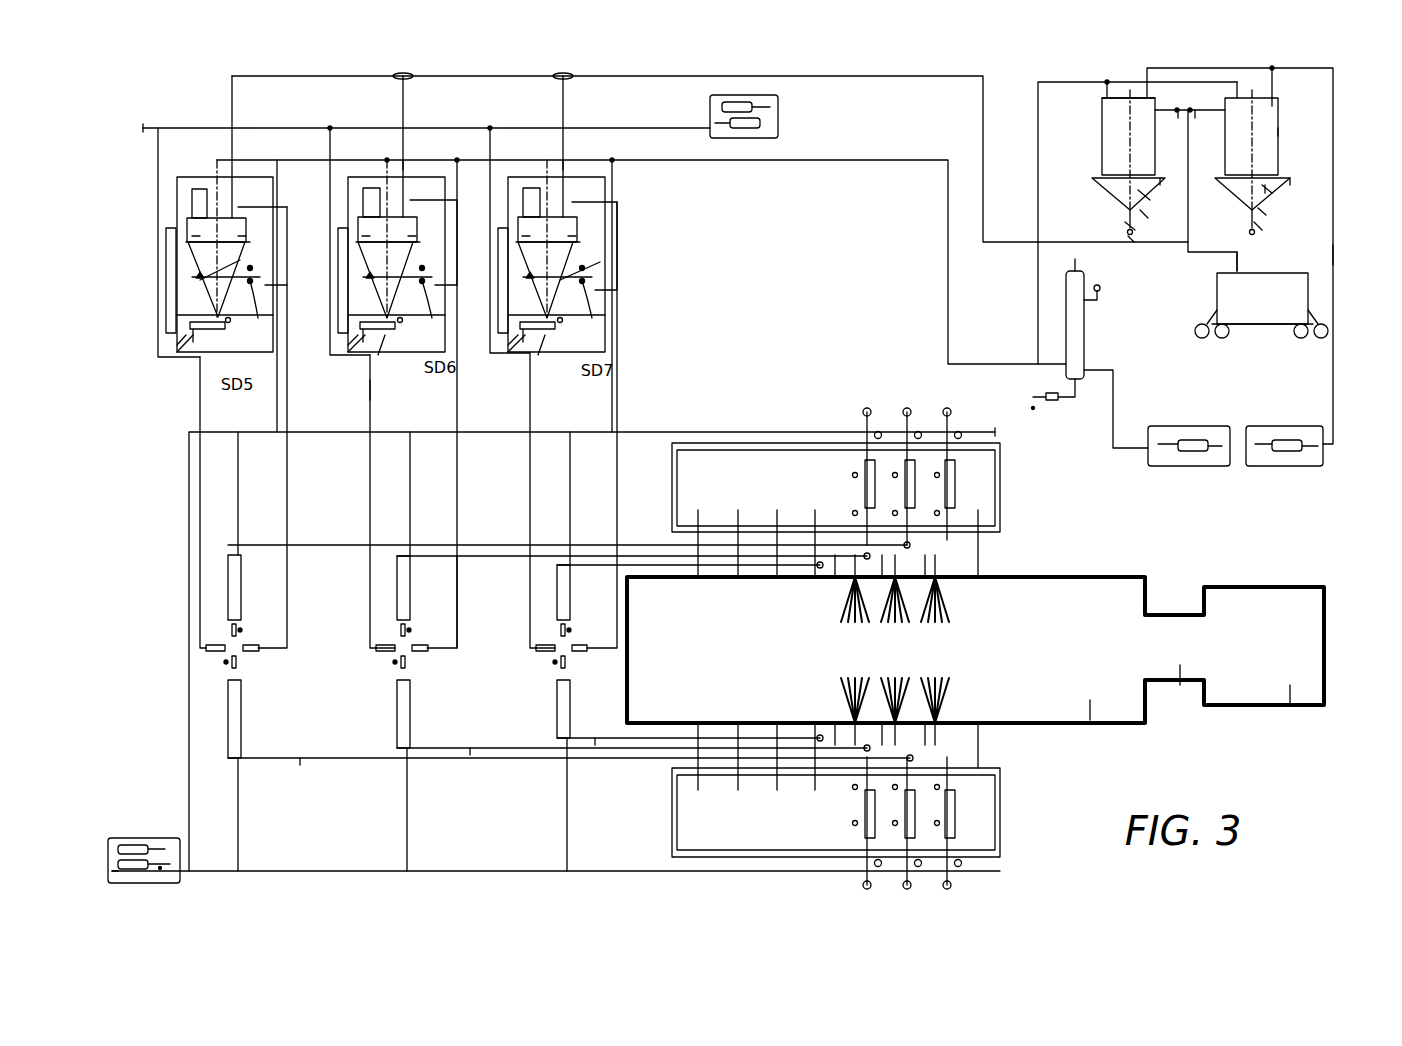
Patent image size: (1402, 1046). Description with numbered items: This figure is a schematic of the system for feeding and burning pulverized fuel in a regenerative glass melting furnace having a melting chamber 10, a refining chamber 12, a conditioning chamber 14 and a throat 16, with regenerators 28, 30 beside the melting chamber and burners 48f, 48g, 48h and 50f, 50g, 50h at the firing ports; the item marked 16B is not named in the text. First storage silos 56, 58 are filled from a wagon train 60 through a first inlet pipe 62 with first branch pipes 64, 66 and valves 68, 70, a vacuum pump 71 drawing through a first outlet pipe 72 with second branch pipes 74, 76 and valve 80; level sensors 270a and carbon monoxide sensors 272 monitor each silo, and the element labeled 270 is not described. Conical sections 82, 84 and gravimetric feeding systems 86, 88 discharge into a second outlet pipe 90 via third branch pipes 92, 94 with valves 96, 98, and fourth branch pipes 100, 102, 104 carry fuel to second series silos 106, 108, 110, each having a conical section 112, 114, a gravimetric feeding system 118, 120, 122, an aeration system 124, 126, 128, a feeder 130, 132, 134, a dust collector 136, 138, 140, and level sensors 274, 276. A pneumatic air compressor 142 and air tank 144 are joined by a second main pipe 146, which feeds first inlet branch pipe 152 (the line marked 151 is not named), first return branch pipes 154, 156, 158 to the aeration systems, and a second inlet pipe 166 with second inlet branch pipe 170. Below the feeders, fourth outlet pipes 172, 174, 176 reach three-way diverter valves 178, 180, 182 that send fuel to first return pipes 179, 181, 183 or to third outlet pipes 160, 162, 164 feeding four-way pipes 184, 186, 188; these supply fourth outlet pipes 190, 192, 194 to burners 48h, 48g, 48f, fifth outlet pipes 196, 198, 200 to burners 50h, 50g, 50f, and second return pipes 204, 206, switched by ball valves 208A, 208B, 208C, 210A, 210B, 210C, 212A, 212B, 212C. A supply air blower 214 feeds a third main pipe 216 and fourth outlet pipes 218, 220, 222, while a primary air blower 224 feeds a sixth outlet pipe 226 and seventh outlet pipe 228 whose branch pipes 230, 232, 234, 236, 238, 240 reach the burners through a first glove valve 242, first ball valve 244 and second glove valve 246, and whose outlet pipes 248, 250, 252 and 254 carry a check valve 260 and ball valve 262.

The melting chamber 10 is at (665, 723).
The refining chamber 12 is at (1090, 715).
The conditioning chamber 14 is at (1290, 700).
The throat 16 is at (1180, 685).
The hopper inlet 16B is at (1102, 105).
The regenerator 28 is at (710, 460).
The regenerator 30 is at (745, 850).
The burner 48f is at (843, 600).
The burner 48g is at (895, 618).
The burner 48h is at (947, 600).
The burner 50f is at (843, 700).
The burner 50g is at (895, 685).
The burner 50h is at (947, 700).
The first storage silo 56 is at (1102, 144).
The first storage silo 58 is at (1228, 175).
The wagon train 60 is at (1258, 324).
The first inlet pipe 62 is at (1237, 258).
The first branch pipe 64 is at (1178, 110).
The first branch pipe 66 is at (1222, 112).
The valve 68 is at (1172, 110).
The valve 70 is at (1195, 110).
The vacuum pump 71 is at (1258, 466).
The first outlet pipe 72 is at (1333, 260).
The second branch pipe 74 is at (1137, 82).
The second branch pipe 76 is at (1272, 68).
The valve 80 is at (1275, 98).
The conical section 82 is at (1137, 195).
The conical section 84 is at (1262, 190).
The gravimetric fuel feeding system 86 is at (1158, 178).
The gravimetric fuel feeding system 88 is at (1290, 178).
The second outlet pipe 90 is at (1130, 236).
The third branch pipe 92 is at (1130, 225).
The third branch pipe 94 is at (1258, 225).
The valve 96 is at (1142, 215).
The valve 98 is at (1262, 210).
The fourth branch pipe 100 is at (232, 104).
The fourth branch pipe 102 is at (403, 104).
The fourth branch pipe 104 is at (563, 104).
The second series silo 106 is at (187, 218).
The second series silo 108 is at (365, 200).
The second series silo 110 is at (520, 222).
The conical section 112 is at (190, 263).
The conical section 114 is at (365, 260).
The gravimetric feeding system 118 is at (192, 250).
The gravimetric feeding system 120 is at (358, 218).
The gravimetric feeding system 122 is at (525, 245).
The aeration system 124 is at (287, 300).
The aeration system 126 is at (400, 323).
The aeration system 128 is at (600, 275).
The feeder 130 is at (228, 323).
The feeder 132 is at (388, 355).
The feeder 134 is at (580, 328).
The dust collector 136 is at (192, 200).
The dust collector 138 is at (370, 188).
The dust collector 140 is at (540, 188).
The pneumatic air compressor 142 is at (1152, 466).
The air tank 144 is at (1084, 330).
The second main pipe 146 is at (948, 250).
The vent connection 151 is at (403, 160).
The first inlet branch pipe 152 is at (563, 160).
The first return branch pipe 154 is at (277, 165).
The first return branch pipe 156 is at (457, 160).
The first return branch pipe 158 is at (612, 165).
The third outlet pipe 160 is at (200, 400).
The third outlet pipe 162 is at (370, 420).
The third outlet pipe 164 is at (530, 415).
The second inlet pipe 166 is at (1038, 160).
The second inlet branch pipe 170 is at (1237, 95).
The fourth outlet pipe 172 is at (166, 333).
The fourth outlet pipe 174 is at (372, 400).
The fourth outlet pipe 176 is at (545, 355).
The three-way diverter valve 178 is at (178, 352).
The first return pipe 179 is at (215, 280).
The three-way diverter valve 180 is at (348, 355).
The first return pipe 181 is at (338, 278).
The three-way diverter valve 182 is at (515, 355).
The first return pipe 183 is at (497, 285).
The four-way pipe 184 is at (217, 172).
The four-way pipe 186 is at (375, 648).
The four-way pipe 188 is at (535, 648).
The fourth outlet pipe 190 is at (330, 545).
The fourth outlet pipe 192 is at (520, 556).
The fourth outlet pipe 194 is at (650, 565).
The fifth outlet pipe 196 is at (300, 758).
The fifth outlet pipe 198 is at (470, 748).
The fifth outlet pipe 200 is at (595, 738).
The second return pipe 204 is at (457, 595).
The second return pipe 206 is at (628, 590).
The ball valve 208A is at (228, 600).
The ball valve 208B is at (250, 655).
The ball valve 208C is at (228, 668).
The ball valve 210A is at (398, 632).
The ball valve 210B is at (420, 657).
The ball valve 210C is at (398, 668).
The ball valve 212A is at (558, 632).
The ball valve 212B is at (580, 655).
The ball valve 212C is at (560, 668).
The pneumatic supply air blower 214 is at (778, 115).
The third main pipe 216 is at (655, 128).
The fourth outlet pipe 218 is at (143, 128).
The fourth outlet pipe 220 is at (330, 128).
The fourth outlet pipe 222 is at (490, 128).
The primary air blower 224 is at (165, 878).
The sixth outlet pipe 226 is at (320, 871).
The seventh outlet pipe 228 is at (189, 530).
The fifth branch pipe 230 is at (863, 885).
The fifth branch pipe 232 is at (903, 885).
The fifth branch pipe 234 is at (952, 885).
The sixth branch pipe 236 is at (860, 412).
The sixth branch pipe 238 is at (903, 410).
The sixth branch pipe 240 is at (951, 412).
The first glove valve 242 is at (865, 470).
The first ball valve 244 is at (865, 505).
The second glove valve 246 is at (855, 475).
The seventh outlet pipe 248 is at (238, 840).
The seventh outlet pipe 250 is at (407, 840).
The seventh outlet pipe 252 is at (567, 840).
The sixth outlet pipe 254 is at (238, 490).
The check valve 260 is at (240, 572).
The ball valve 262 is at (241, 590).
The pressure line 270 is at (1268, 128).
The level sensor 270a is at (1266, 186).
The sensor 272 is at (983, 110).
The first level sensor 274 is at (185, 215).
The second level sensor 276 is at (200, 280).